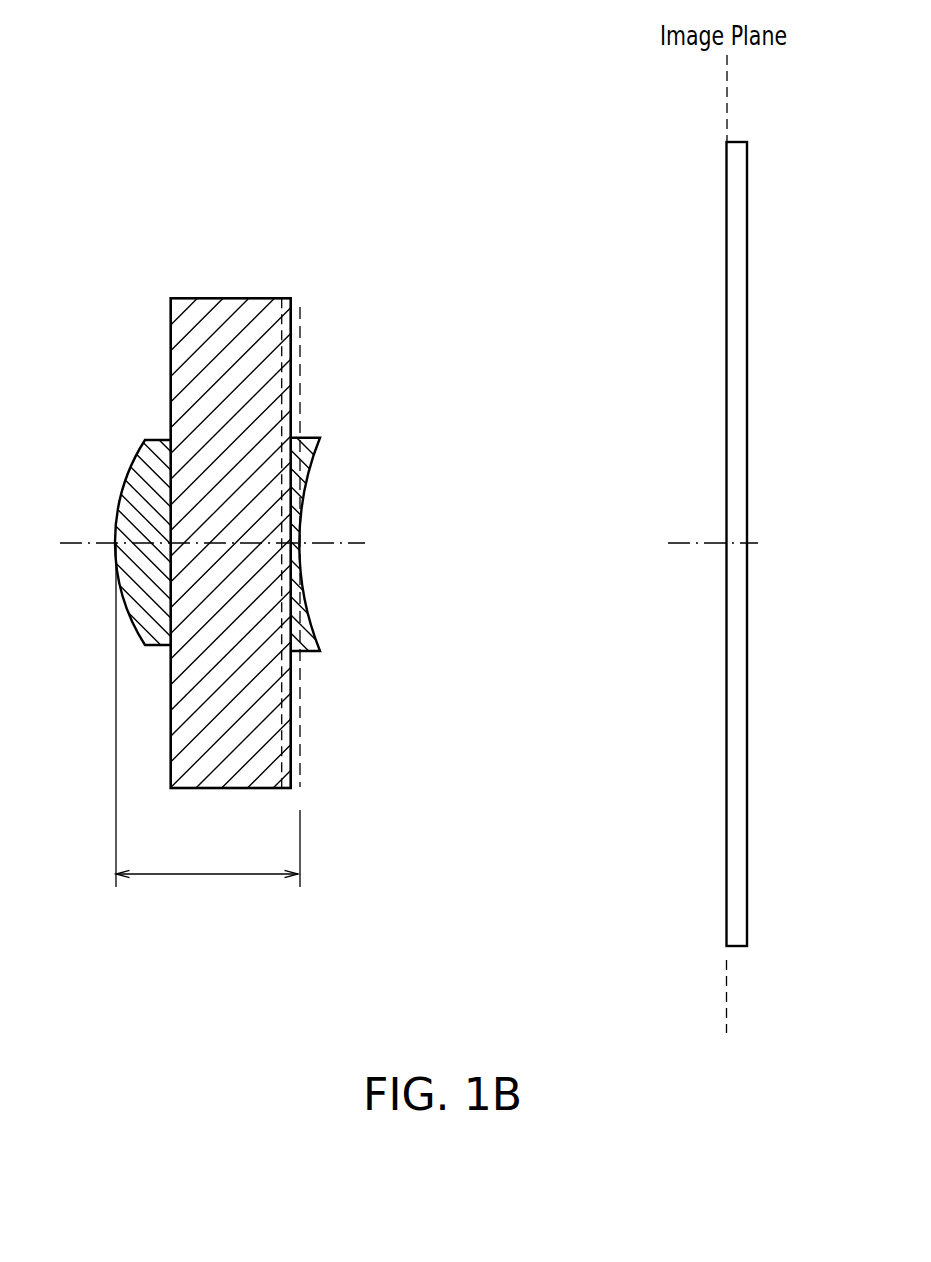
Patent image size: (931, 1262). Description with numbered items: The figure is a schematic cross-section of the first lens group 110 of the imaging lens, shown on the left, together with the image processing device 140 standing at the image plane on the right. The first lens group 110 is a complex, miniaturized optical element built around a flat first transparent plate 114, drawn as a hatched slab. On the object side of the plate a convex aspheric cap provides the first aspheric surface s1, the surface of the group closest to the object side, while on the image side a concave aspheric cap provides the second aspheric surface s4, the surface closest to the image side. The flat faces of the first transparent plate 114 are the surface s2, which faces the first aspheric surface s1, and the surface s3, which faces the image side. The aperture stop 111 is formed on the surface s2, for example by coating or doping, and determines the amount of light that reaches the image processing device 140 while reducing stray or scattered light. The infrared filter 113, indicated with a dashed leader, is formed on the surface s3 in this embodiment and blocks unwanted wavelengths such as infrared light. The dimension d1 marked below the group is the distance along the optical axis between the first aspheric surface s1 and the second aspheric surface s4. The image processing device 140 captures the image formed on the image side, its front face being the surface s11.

The first lens group 110 is at (822, 1071).
The aperture stop 111 is at (170, 370).
The infrared filter 113 is at (300, 371).
The first transparent plate 114 is at (230, 327).
The image processing device 140 is at (740, 830).
The first aspheric surface s1 is at (132, 628).
The surface S2 s2 is at (170, 720).
The surface S3 s3 is at (290, 723).
The second aspheric surface s4 is at (303, 627).
The surface S11 s11 is at (727, 367).
The distance d1 is at (208, 715).